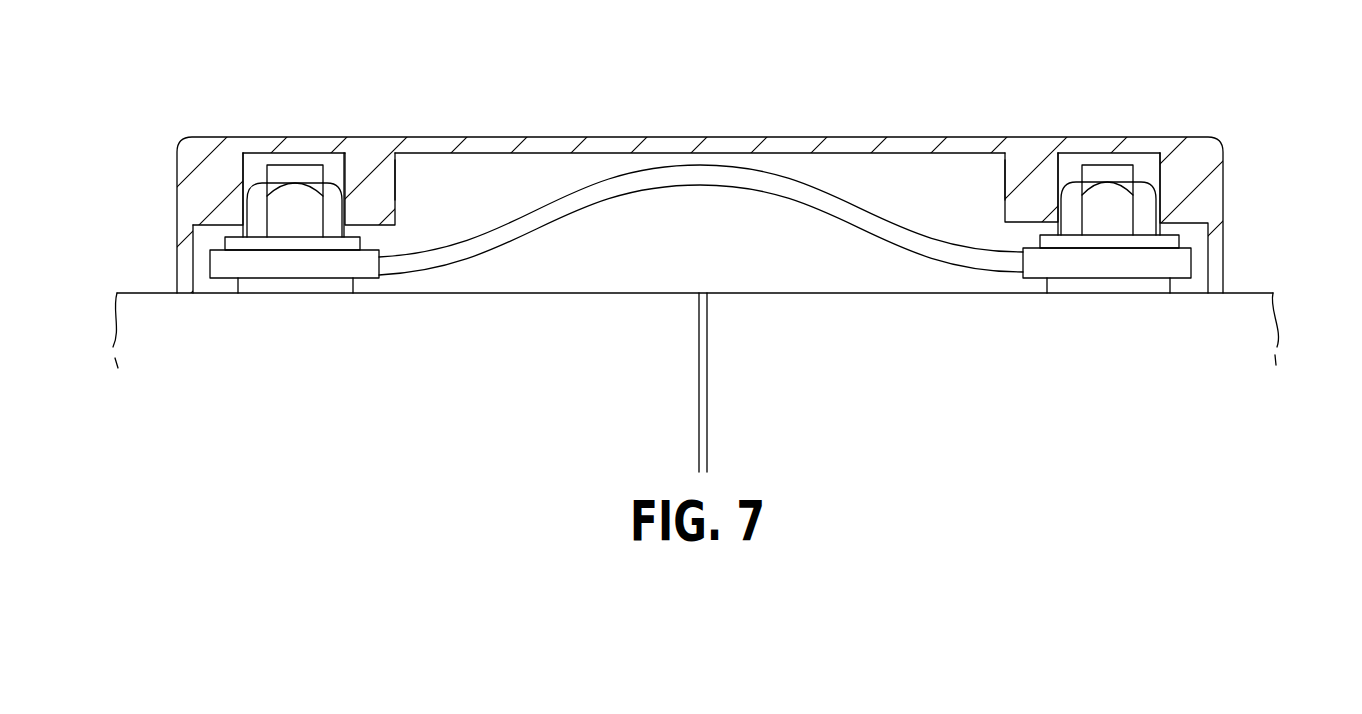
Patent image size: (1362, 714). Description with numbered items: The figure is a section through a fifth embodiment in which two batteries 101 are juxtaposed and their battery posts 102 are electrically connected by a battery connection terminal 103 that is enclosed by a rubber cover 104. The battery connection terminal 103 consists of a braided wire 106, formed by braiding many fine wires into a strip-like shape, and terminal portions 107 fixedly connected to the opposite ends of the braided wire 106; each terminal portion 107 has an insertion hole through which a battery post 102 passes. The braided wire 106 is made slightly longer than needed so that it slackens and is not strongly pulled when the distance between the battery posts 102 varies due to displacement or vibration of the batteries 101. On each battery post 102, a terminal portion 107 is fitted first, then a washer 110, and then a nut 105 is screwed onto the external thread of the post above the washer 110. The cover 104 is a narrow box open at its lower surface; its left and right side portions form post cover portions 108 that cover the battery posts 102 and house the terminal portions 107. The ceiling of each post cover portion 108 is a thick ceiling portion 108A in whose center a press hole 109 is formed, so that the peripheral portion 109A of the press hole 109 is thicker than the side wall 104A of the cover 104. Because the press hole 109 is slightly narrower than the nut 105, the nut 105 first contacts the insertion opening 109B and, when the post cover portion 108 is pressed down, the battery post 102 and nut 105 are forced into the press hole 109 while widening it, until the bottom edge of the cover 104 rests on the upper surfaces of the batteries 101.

The battery 101 is at (135, 325).
The battery post 102 is at (706, 185).
The battery connection terminal 103 is at (701, 174).
The cover 104 is at (518, 118).
The side wall 104A is at (177, 267).
The nut 105 is at (250, 197).
The braided wire 106 is at (537, 207).
The terminal portion 107 is at (220, 265).
The post cover portion 108 is at (227, 137).
The thick ceiling portion 108A is at (382, 225).
The press hole 109 is at (333, 180).
The peripheral portion 109A is at (398, 180).
The insertion opening 109B is at (341, 212).
The washer 110 is at (233, 243).